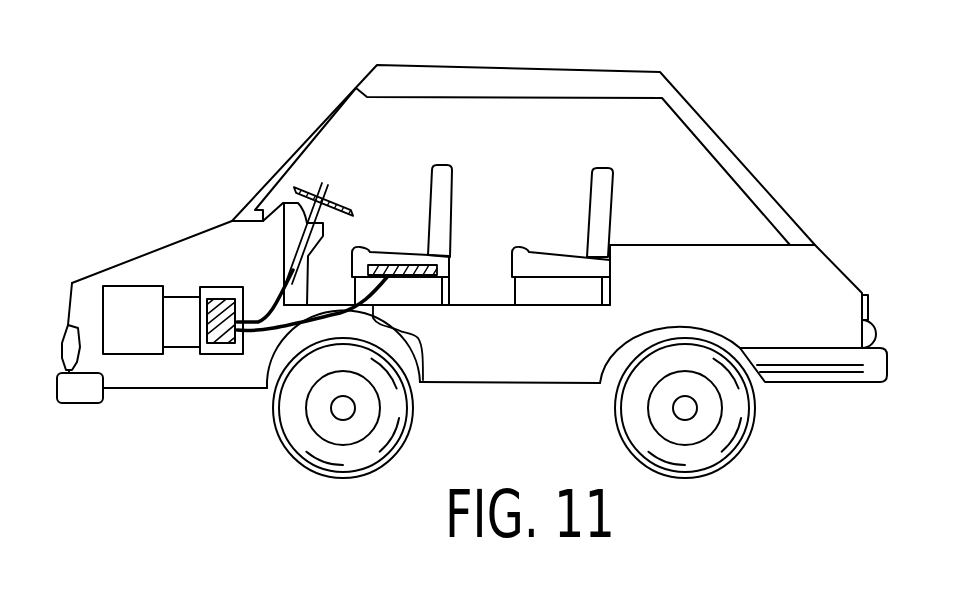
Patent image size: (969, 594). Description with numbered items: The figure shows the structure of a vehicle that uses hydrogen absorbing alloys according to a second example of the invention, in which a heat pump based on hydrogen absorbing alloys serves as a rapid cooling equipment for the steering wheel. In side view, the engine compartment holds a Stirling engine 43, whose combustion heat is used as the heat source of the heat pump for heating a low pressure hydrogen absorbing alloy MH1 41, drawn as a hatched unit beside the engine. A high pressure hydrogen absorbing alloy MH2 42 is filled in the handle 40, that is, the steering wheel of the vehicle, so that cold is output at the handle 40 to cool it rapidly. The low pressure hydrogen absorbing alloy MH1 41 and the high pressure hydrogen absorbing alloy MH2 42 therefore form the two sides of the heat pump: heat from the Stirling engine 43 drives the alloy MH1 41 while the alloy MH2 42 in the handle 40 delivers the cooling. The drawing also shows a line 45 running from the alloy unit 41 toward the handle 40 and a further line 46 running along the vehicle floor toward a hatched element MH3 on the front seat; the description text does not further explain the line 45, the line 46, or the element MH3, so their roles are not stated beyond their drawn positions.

The handle 40 is at (270, 160).
The high pressure hydrogen absorbing alloy 42 is at (269, 154).
The high pressure hydrogen absorbing alloy MH2 is at (331, 200).
The power cable to steering wheel heater 45 is at (252, 320).
The Stirling engine 43 is at (147, 345).
The low pressure hydrogen absorbing alloy 41 is at (183, 413).
The low pressure hydrogen absorbing alloy MH1 is at (200, 348).
The seat heater MH3 is at (418, 277).
The cable routing along vehicle floor 46 is at (425, 385).